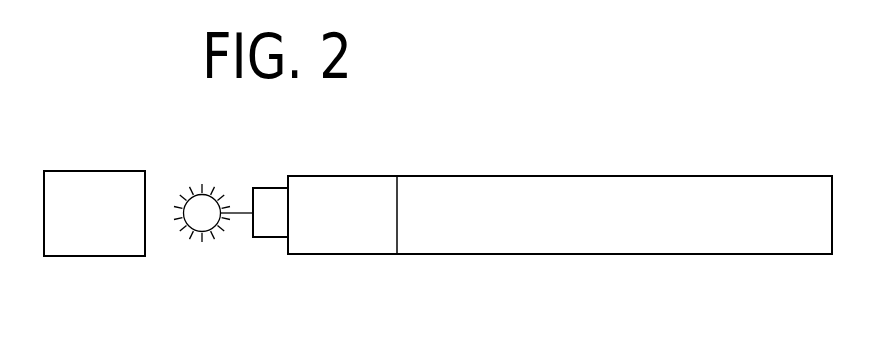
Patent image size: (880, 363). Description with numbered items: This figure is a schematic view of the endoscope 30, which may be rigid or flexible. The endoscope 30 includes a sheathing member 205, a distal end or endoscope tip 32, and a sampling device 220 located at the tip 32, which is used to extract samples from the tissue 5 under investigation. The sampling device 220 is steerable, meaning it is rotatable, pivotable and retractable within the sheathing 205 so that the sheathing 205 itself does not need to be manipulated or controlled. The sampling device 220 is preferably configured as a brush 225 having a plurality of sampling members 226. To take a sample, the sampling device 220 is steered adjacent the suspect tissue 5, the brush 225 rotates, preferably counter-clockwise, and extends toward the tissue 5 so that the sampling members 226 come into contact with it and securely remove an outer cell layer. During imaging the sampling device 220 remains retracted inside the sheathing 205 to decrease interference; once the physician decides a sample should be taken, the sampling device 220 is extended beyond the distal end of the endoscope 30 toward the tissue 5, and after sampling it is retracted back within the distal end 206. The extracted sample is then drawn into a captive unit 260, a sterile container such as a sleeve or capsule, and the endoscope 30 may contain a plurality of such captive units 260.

The tissue 5 is at (93, 171).
The endoscope 30 is at (477, 125).
The distal end or endoscope tip 32 is at (347, 176).
The sheathing member 205 is at (552, 176).
The distal end 206 is at (347, 254).
The sampling device 220 is at (200, 260).
The brush 225 is at (196, 214).
The sampling members 226 is at (213, 191).
The captive unit 260 is at (270, 237).